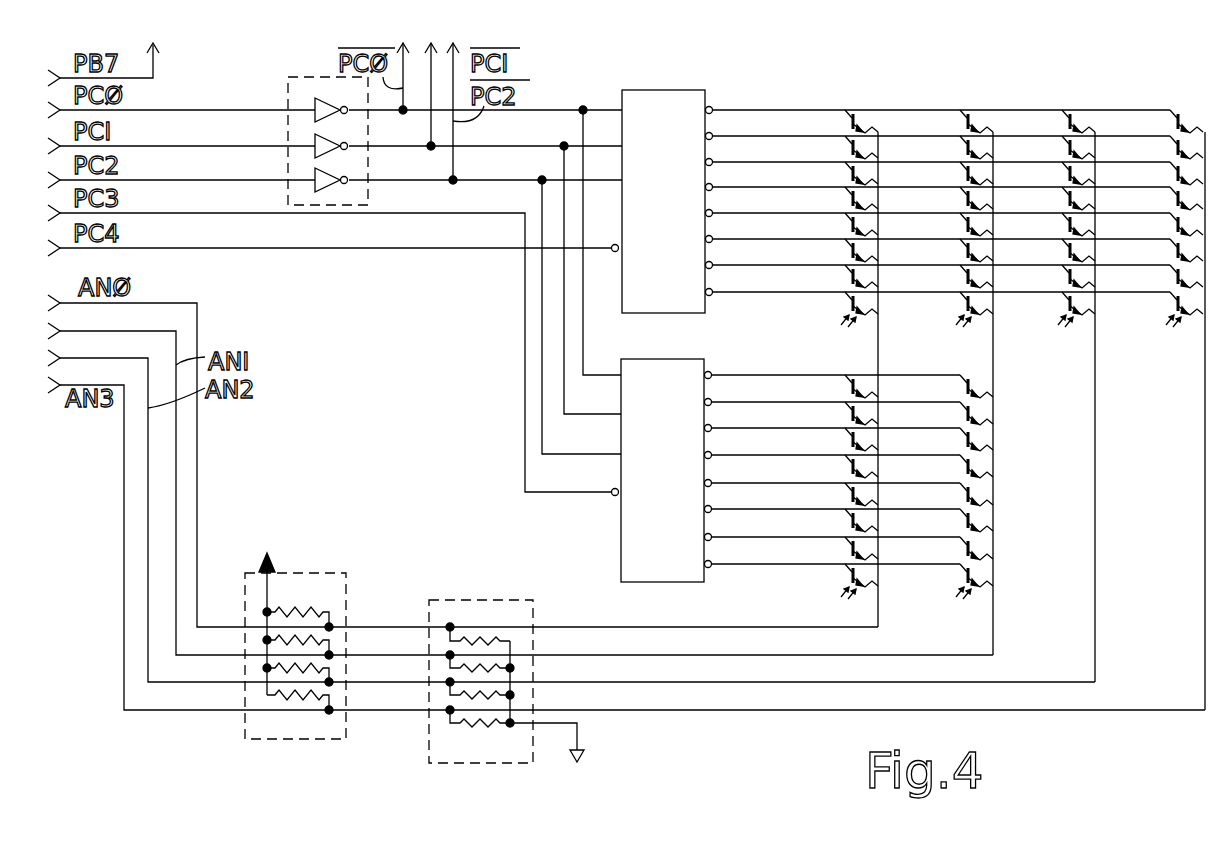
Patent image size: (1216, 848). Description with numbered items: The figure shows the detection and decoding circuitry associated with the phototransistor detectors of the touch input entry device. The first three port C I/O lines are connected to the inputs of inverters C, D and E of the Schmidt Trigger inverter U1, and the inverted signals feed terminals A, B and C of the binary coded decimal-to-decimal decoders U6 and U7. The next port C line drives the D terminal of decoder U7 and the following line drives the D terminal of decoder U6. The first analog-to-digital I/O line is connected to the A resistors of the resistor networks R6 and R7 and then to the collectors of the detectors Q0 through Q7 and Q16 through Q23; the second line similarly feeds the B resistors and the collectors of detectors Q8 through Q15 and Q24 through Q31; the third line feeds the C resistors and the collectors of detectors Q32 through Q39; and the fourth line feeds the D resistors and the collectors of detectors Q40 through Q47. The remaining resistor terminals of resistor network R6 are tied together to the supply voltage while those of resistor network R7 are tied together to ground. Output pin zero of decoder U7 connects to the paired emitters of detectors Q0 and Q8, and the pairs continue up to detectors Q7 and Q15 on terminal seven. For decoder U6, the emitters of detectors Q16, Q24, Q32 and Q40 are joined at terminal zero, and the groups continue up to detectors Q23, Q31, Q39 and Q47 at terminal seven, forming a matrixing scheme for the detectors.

The Schmidt Trigger inverter U1 is at (308, 140).
The BCD-to-decimal decoder U6 is at (667, 215).
The BCD-to-decimal decoder U7 is at (666, 485).
The resistor network R6 is at (274, 629).
The resistor network R7 is at (496, 689).
The phototransistor Q0 is at (841, 581).
The phototransistor Q7 is at (841, 369).
The phototransistor Q8 is at (955, 581).
The phototransistor Q15 is at (955, 369).
The phototransistor Q16 is at (835, 309).
The phototransistor Q23 is at (832, 104).
The phototransistor Q24 is at (949, 309).
The phototransistor Q31 is at (949, 104).
The phototransistor Q32 is at (1054, 309).
The phototransistor Q39 is at (1050, 104).
The phototransistor Q40 is at (1157, 309).
The phototransistor Q47 is at (1156, 104).